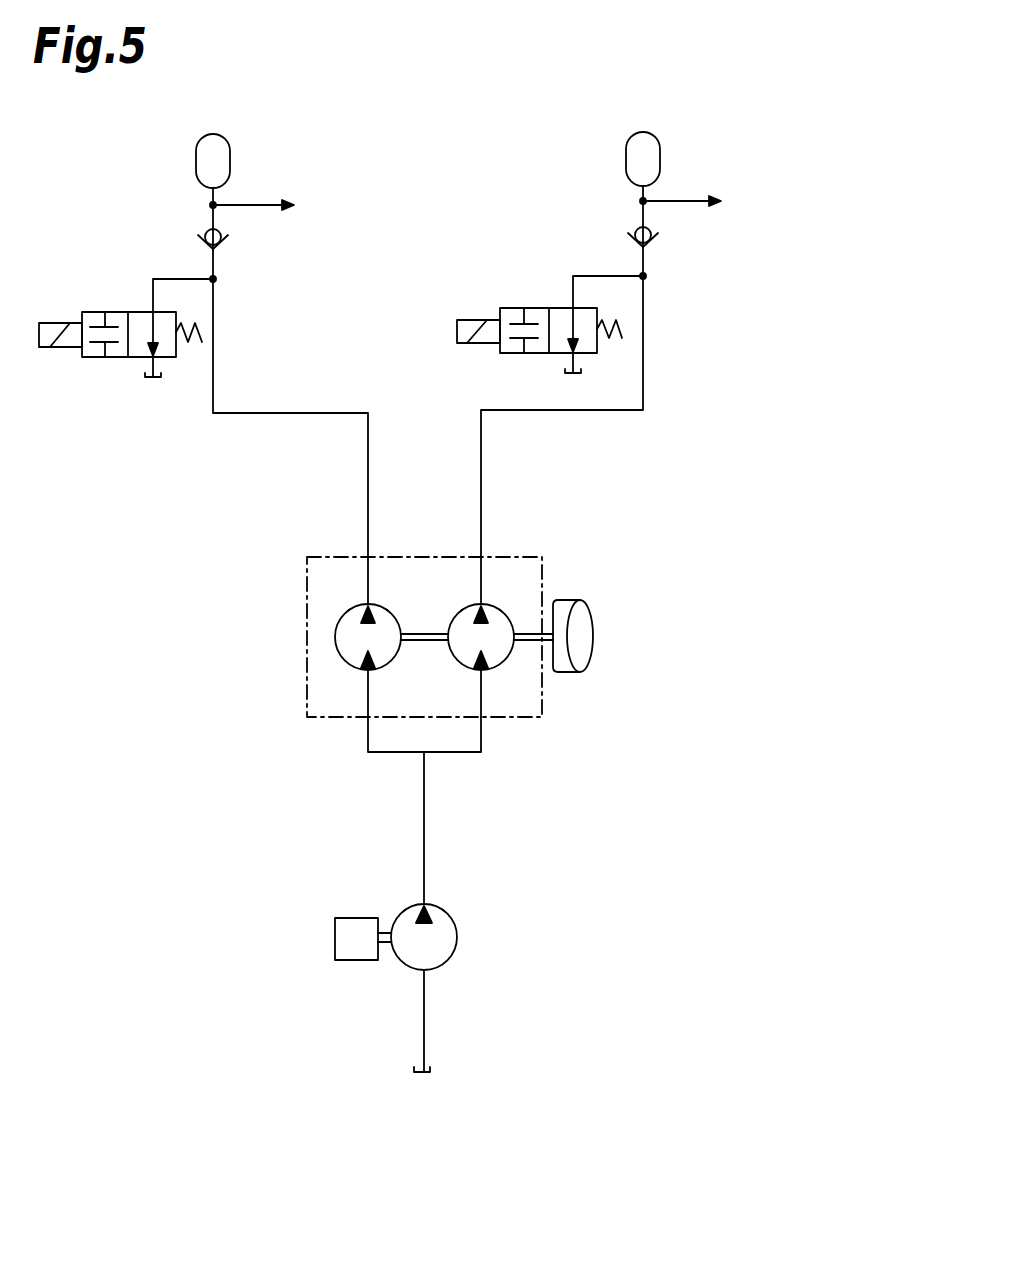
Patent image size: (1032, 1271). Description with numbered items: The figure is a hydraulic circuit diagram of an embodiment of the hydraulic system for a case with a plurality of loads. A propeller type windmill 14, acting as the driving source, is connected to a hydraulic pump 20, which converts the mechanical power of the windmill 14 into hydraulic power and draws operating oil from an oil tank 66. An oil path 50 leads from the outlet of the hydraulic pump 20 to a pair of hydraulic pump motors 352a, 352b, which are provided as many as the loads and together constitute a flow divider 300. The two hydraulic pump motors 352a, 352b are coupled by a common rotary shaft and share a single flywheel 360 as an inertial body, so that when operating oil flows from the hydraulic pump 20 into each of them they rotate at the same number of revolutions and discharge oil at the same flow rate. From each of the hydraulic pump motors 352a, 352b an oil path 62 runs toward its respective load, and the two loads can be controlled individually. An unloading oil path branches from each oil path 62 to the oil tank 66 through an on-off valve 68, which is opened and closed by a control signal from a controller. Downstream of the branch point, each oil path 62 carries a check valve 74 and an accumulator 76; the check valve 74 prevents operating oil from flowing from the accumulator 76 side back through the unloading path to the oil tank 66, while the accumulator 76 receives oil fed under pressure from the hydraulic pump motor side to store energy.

The windmill 14 is at (355, 918).
The hydraulic pump 20 is at (457, 937).
The oil path 50 is at (424, 828).
The oil path 62 is at (213, 305).
The oil tank 66 is at (144, 377).
The on-off valve 68 is at (100, 312).
The check valve 74 is at (222, 241).
The accumulator 76 is at (231, 158).
The flow divider 300 is at (515, 557).
The hydraulic pump motor 352a is at (338, 620).
The hydraulic pump motor 352b is at (500, 667).
The flywheel 360 is at (585, 635).